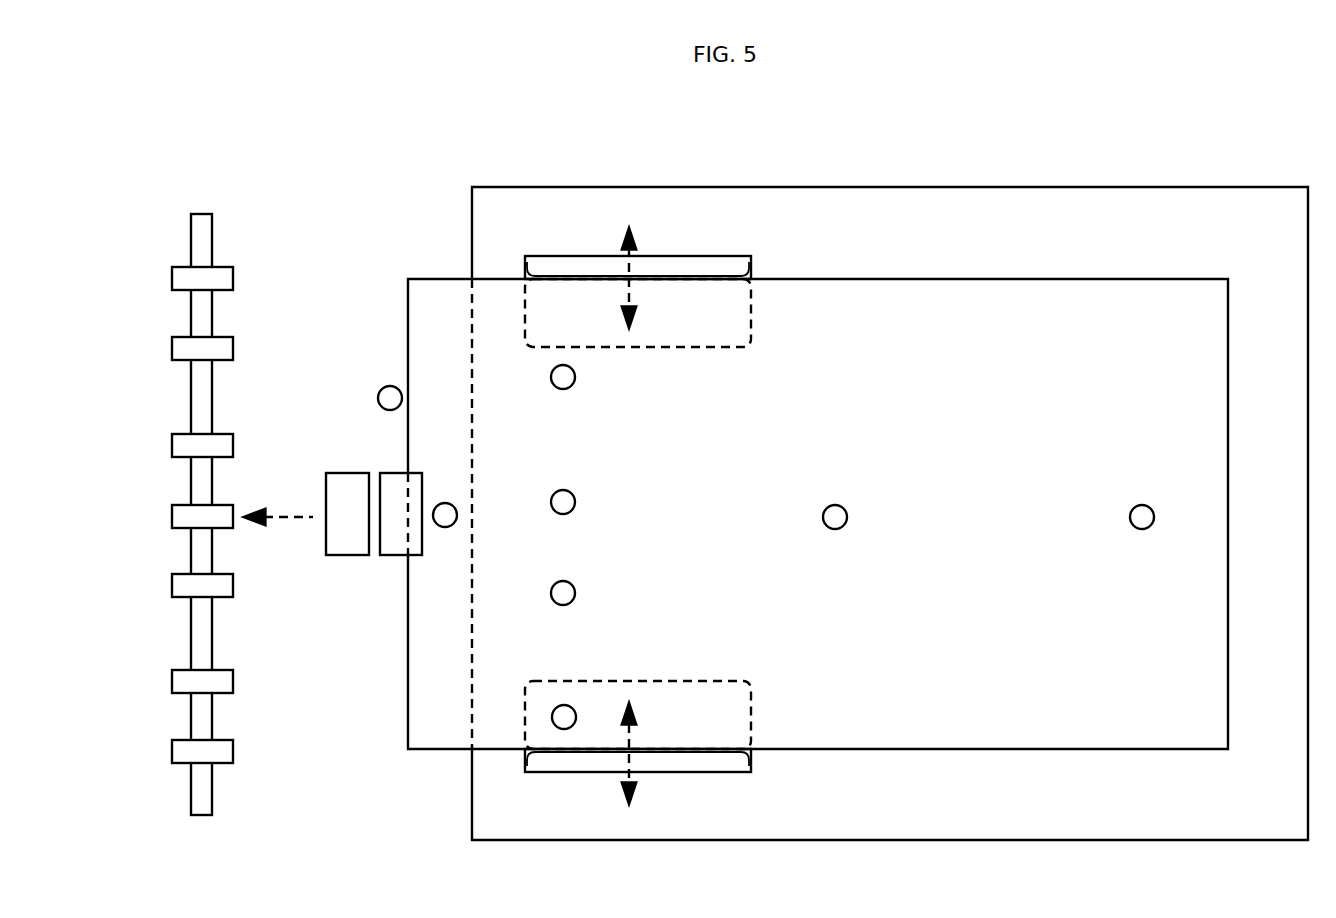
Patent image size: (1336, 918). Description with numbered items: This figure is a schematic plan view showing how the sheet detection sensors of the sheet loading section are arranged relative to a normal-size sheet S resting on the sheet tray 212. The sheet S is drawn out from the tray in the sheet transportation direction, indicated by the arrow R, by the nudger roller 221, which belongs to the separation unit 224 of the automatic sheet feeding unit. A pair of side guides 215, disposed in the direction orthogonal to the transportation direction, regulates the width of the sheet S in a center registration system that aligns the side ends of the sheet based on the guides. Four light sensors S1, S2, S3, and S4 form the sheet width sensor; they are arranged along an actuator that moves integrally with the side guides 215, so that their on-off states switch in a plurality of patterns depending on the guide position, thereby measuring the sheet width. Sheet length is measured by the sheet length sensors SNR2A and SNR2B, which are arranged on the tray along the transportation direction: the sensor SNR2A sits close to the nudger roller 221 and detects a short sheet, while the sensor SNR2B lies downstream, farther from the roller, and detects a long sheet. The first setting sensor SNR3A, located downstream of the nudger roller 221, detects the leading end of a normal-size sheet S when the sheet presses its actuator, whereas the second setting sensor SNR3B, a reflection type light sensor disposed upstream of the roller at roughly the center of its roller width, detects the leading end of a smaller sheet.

The sheet tray 212 is at (989, 218).
The side guides 215 is at (182, 348).
The nudger roller 221 is at (396, 545).
The separation unit 224 is at (335, 562).
The sheet S is at (818, 514).
The sheet transportation direction R is at (277, 504).
The first setting sensor SNR3A is at (390, 398).
The second setting sensor SNR3B is at (445, 515).
The sheet length sensor SNR2A is at (835, 517).
The sheet length sensor SNR2B is at (1142, 517).
The light sensor S1 is at (564, 717).
The light sensor S2 is at (563, 593).
The light sensor S3 is at (563, 377).
The light sensor S4 is at (563, 502).